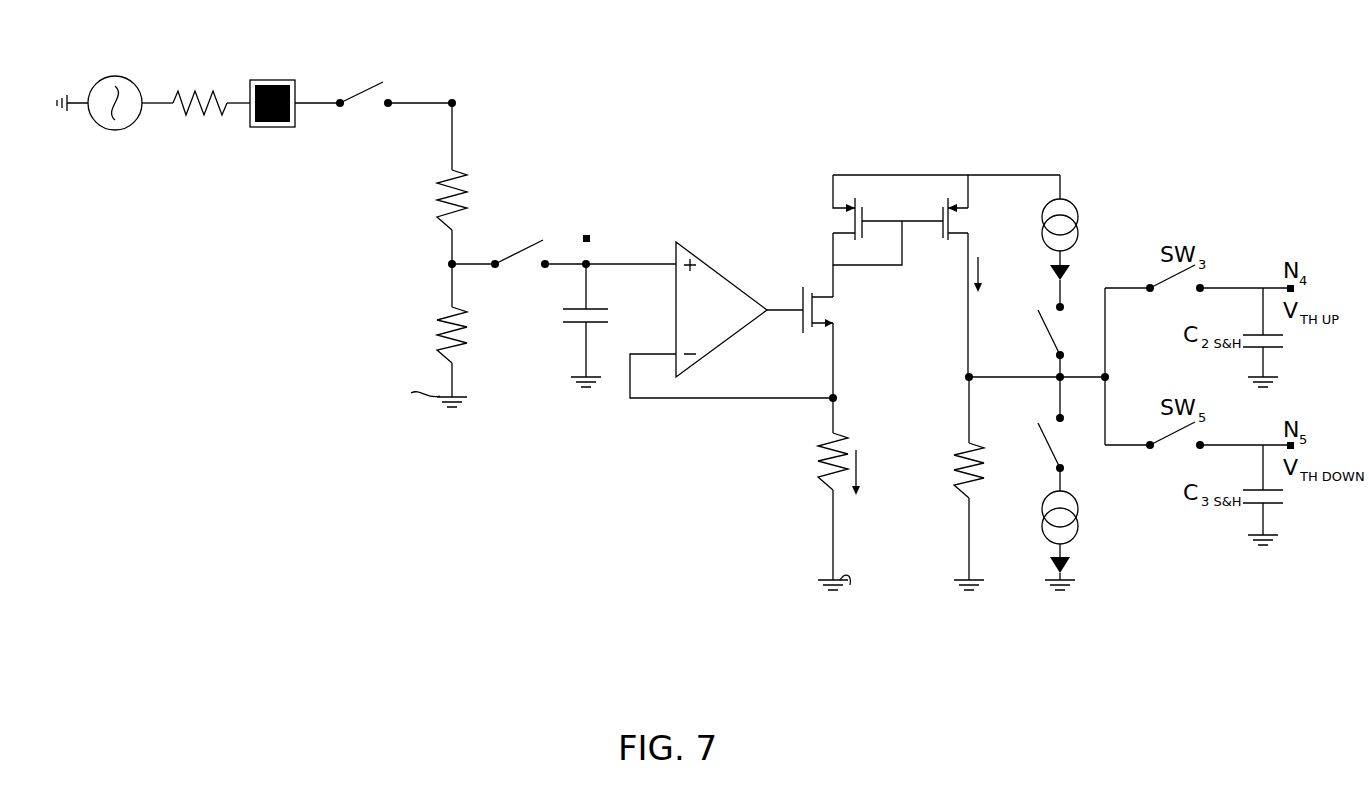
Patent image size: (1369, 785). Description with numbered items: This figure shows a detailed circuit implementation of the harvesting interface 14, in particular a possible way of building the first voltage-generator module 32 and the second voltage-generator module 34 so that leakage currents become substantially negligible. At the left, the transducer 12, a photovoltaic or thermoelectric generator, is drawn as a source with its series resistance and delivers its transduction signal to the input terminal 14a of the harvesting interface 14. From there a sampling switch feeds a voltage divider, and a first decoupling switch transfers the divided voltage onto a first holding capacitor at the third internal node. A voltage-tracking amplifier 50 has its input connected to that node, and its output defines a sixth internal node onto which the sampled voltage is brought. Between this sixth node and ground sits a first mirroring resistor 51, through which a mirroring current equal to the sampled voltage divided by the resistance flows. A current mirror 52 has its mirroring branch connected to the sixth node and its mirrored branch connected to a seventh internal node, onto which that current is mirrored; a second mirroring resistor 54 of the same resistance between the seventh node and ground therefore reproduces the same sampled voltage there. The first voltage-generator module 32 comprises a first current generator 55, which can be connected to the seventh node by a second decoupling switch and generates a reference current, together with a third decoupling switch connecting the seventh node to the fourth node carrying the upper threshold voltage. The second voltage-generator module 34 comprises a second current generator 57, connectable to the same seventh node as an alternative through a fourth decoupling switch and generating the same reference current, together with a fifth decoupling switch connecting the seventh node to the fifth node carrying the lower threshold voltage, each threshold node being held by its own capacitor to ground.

The transducer 12 is at (188, 150).
The harvesting interface 14 is at (824, 78).
The input terminal 14a is at (270, 126).
The first voltage-generator module 32 is at (1075, 250).
The second voltage-generator module 34 is at (1055, 506).
The voltage-tracking amplifier 50 is at (722, 287).
The first mirroring resistor 51 is at (823, 482).
The current mirror 52 is at (901, 288).
The second mirroring resistor 54 is at (963, 494).
The first current generator 55 is at (1043, 222).
The second current generator 57 is at (1077, 536).